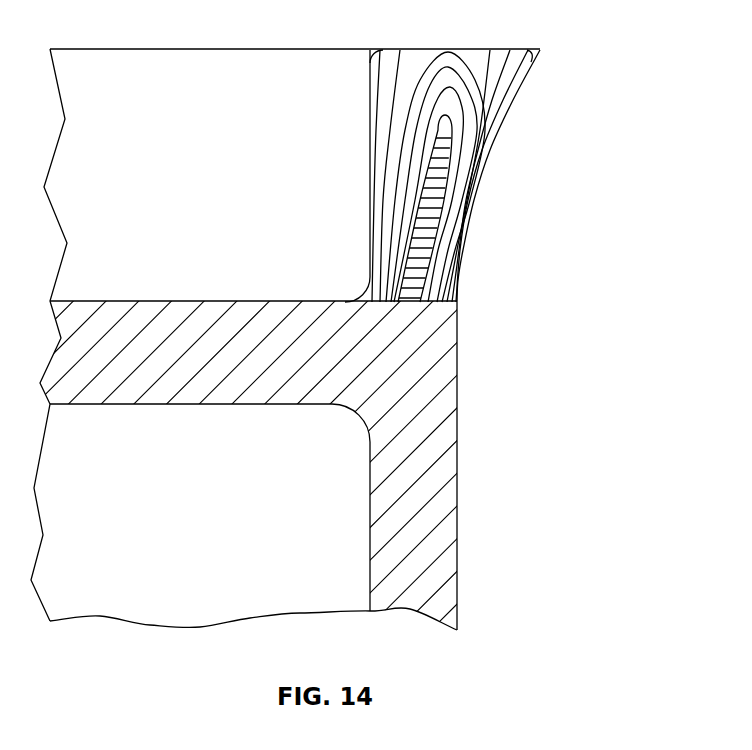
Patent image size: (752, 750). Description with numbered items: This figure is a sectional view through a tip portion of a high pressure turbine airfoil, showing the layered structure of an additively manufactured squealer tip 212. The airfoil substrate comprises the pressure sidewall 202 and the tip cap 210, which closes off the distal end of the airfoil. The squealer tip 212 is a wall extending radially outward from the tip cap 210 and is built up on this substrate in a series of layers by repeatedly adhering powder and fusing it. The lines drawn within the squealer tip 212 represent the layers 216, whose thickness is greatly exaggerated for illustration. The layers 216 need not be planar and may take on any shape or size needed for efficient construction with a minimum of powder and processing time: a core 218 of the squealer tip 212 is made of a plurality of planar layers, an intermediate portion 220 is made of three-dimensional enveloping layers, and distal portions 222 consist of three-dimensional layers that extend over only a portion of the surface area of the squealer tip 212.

The pressure sidewall 202 is at (445, 470).
The tip cap 210 is at (224, 397).
The squealer tip 212 is at (437, 26).
The layers 216 is at (465, 75).
The core 218 is at (452, 222).
The intermediate portion 220 is at (498, 100).
The distal portions 222 is at (366, 47).